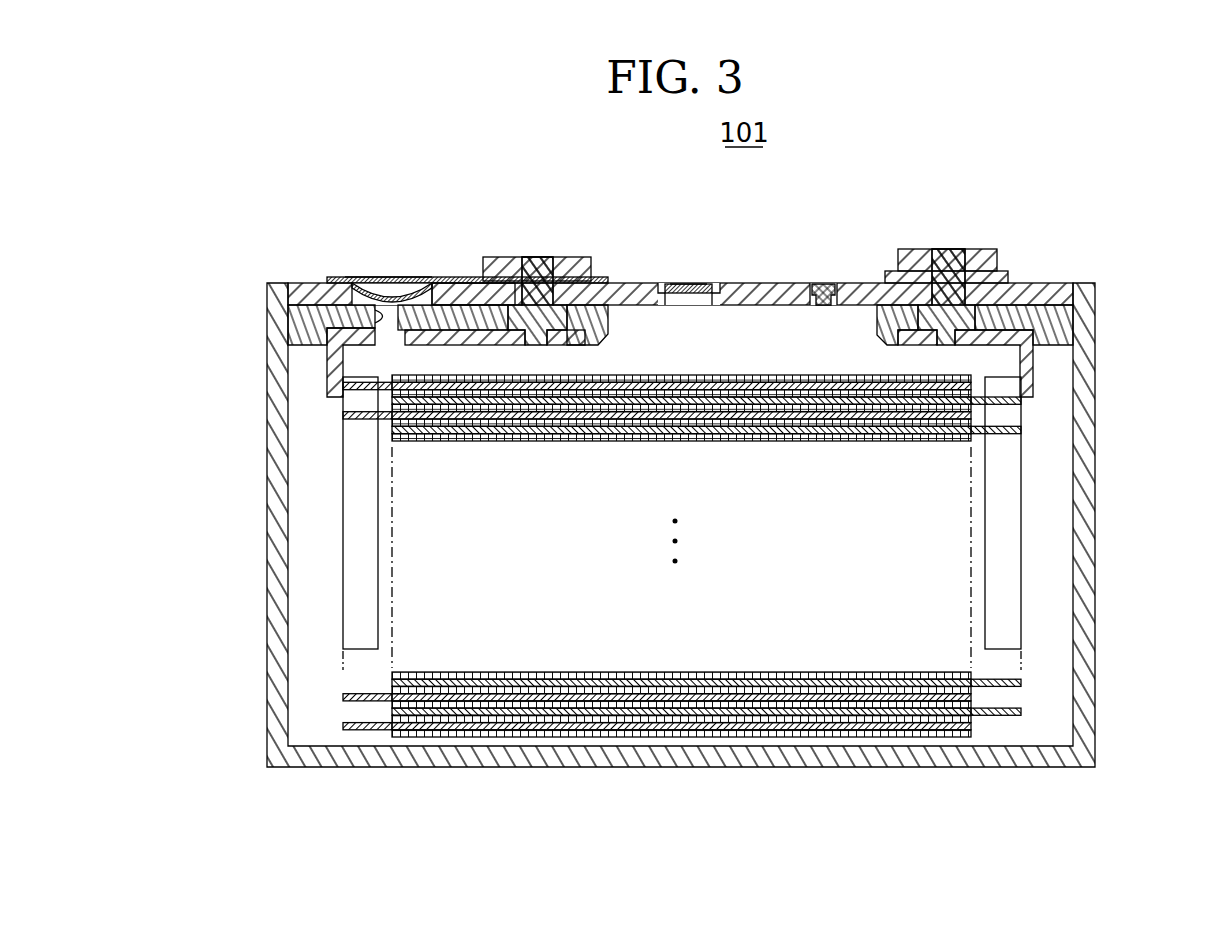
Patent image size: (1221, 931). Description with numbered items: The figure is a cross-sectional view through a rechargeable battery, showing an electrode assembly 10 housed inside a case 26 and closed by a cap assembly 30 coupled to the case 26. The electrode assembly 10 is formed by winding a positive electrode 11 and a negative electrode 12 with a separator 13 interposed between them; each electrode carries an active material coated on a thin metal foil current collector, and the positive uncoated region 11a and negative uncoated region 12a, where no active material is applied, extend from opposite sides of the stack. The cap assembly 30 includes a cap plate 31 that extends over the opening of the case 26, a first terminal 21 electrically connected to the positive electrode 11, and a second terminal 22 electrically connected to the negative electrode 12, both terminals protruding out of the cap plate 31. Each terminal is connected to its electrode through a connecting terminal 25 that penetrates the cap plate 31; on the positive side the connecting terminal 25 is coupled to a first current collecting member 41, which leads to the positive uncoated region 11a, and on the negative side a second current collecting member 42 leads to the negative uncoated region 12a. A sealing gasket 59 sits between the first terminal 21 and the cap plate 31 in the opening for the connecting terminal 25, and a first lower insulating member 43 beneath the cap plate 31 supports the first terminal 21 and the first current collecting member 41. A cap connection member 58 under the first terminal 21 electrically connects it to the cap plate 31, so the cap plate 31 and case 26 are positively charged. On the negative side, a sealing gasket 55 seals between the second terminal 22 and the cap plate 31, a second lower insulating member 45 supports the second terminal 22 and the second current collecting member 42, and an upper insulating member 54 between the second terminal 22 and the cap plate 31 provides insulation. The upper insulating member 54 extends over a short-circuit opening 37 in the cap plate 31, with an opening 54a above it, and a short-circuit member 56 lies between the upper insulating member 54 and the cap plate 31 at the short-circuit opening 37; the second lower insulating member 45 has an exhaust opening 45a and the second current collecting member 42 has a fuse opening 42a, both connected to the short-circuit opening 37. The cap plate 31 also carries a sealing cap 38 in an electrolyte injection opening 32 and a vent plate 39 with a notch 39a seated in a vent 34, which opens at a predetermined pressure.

The electrode assembly 10 is at (678, 598).
The positive electrode 11 is at (877, 714).
The positive uncoated region 11a is at (1001, 716).
The negative electrode 12 is at (485, 730).
The negative uncoated region 12a is at (361, 731).
The separator 13 is at (682, 720).
The first terminal 21 is at (980, 251).
The second terminal 22 is at (500, 258).
The connecting terminal 25 is at (540, 257).
The case 26 is at (1095, 558).
The cap assembly 30 is at (669, 415).
The cap plate 31 is at (1058, 293).
The electrolyte injection opening 32 is at (820, 306).
The vent 34 is at (687, 306).
The short-circuit opening 37 is at (356, 283).
The sealing cap 38 is at (819, 284).
The vent plate 39 is at (714, 285).
The notch 39a is at (683, 284).
The first current collecting member 41 is at (1005, 410).
The second current collecting member 42 is at (358, 470).
The fuse opening 42a is at (378, 348).
The first lower insulating member 43 is at (1042, 322).
The second lower insulating member 45 is at (304, 323).
The exhaust opening 45a is at (380, 327).
The upper insulating member 54 is at (598, 279).
The opening 54a is at (411, 277).
The sealing gasket 55 is at (472, 292).
The short-circuit member 56 is at (388, 296).
The cap connection member 58 is at (1010, 277).
The sealing gasket 59 is at (884, 298).